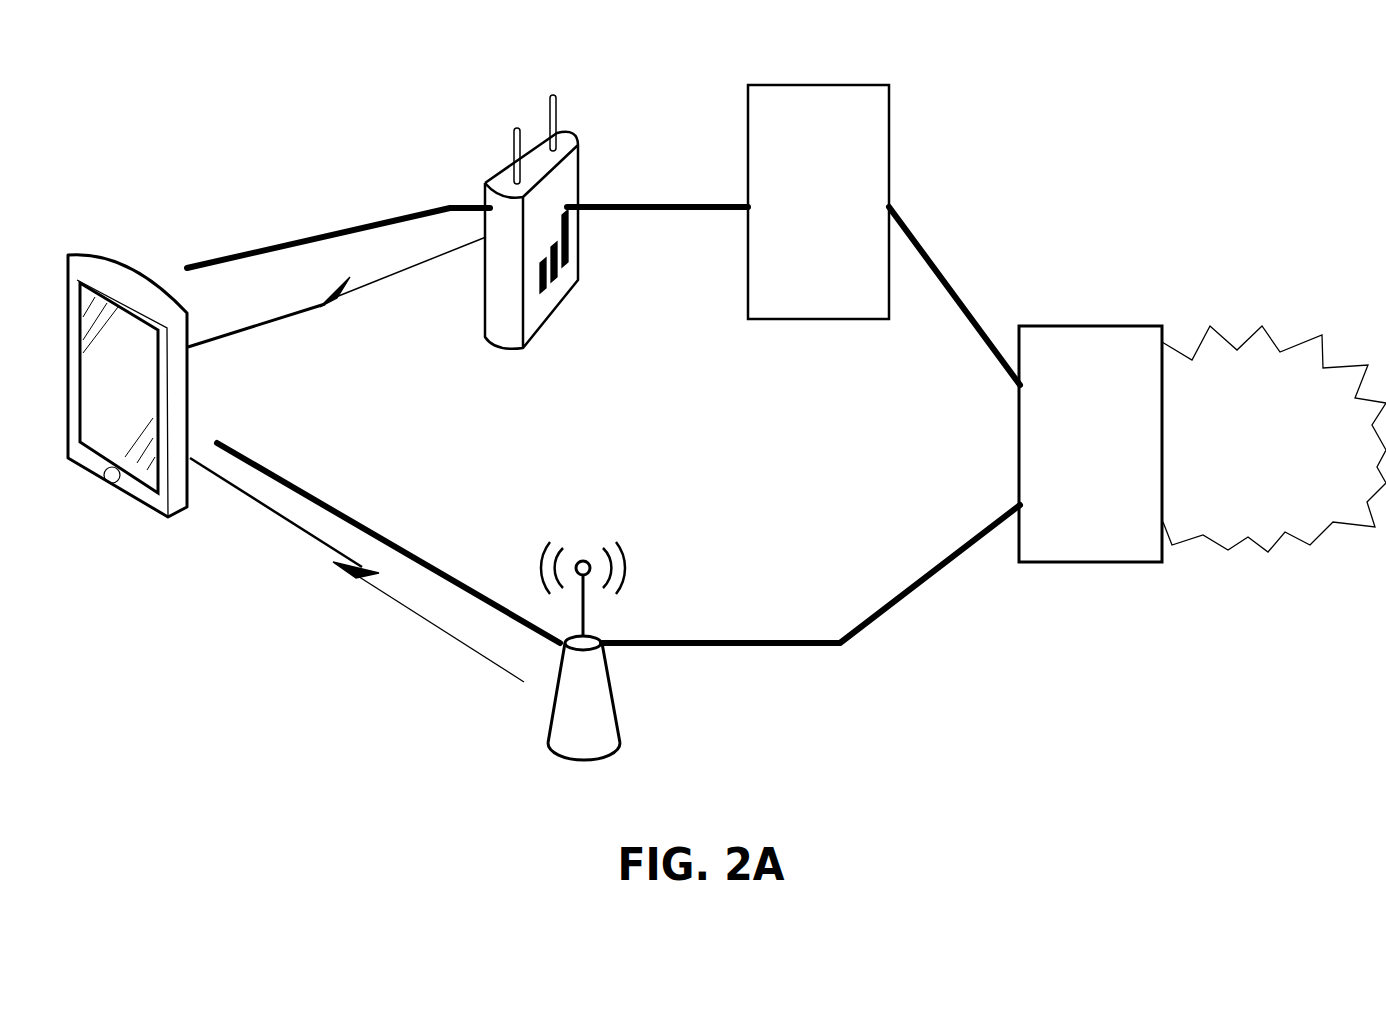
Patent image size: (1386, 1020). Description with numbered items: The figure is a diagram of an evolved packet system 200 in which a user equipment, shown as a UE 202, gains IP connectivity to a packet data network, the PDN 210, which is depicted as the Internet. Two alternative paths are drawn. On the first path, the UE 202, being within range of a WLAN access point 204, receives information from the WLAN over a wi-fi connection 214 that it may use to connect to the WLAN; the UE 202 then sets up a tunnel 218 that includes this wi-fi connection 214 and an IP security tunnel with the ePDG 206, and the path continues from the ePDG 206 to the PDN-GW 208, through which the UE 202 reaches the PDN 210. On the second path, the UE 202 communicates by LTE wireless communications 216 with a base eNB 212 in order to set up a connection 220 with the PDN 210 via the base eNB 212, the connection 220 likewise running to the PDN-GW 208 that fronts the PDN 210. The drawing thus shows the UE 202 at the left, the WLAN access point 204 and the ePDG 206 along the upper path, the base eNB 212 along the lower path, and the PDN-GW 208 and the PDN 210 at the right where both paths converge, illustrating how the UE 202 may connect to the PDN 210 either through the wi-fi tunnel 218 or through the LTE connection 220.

The evolved packet system 200 is at (134, 110).
The UE 202 is at (80, 252).
The WLAN access point 204 is at (577, 158).
The ePDG 206 is at (818, 202).
The PDN-GW 208 is at (1090, 444).
The PDN 210 is at (1274, 439).
The base eNB 212 is at (620, 745).
The wi-fi connection 214 is at (332, 306).
The LTE wireless communications 216 is at (346, 576).
The tunnel 218 is at (303, 240).
The connection 220 is at (363, 526).